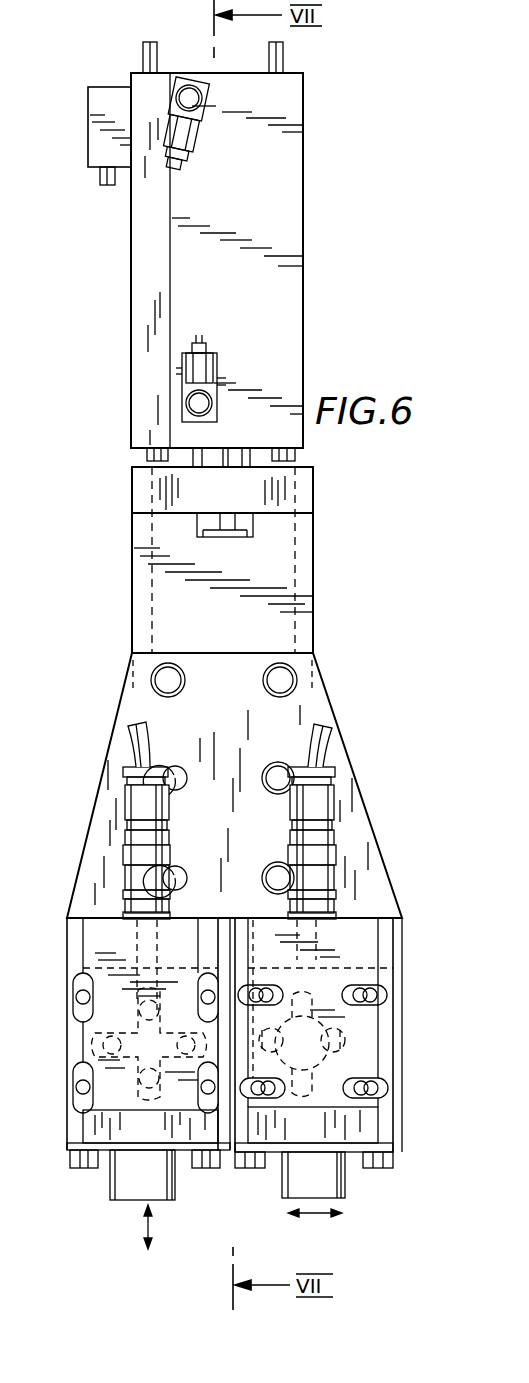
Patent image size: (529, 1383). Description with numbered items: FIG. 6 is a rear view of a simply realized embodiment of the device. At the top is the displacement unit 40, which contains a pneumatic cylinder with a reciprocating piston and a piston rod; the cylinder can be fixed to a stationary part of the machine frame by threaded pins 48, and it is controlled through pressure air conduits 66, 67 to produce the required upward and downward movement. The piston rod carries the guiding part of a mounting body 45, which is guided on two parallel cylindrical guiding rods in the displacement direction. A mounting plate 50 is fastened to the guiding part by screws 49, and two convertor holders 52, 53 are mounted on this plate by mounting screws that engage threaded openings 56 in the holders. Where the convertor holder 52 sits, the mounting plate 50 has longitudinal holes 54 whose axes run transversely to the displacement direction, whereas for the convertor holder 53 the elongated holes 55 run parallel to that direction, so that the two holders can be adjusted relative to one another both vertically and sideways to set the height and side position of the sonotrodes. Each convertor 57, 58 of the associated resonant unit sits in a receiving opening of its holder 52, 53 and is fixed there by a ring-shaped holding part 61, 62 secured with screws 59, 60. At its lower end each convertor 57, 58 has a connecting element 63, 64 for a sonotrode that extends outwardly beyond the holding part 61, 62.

The displacement unit 40 is at (306, 179).
The mounting body 45 is at (128, 558).
The threaded pins 48 is at (148, 42).
The screws 49 is at (285, 677).
The mounting plate 50 is at (377, 880).
The convertor holder 52 is at (403, 946).
The convertor holder 53 is at (73, 1037).
The longitudinal holes 54 is at (357, 1020).
The elongated holes 55 is at (80, 975).
The threaded openings 56 is at (83, 1087).
The convertor 57 is at (373, 937).
The convertor 58 is at (98, 930).
The screws 59 is at (388, 1160).
The screws 60 is at (82, 1166).
The ring-shaped holding part 61 is at (356, 1122).
The ring-shaped holding part 62 is at (82, 1127).
The connecting element 63 is at (338, 1185).
The connecting element 64 is at (168, 1182).
The pressure air conduit 66 is at (202, 337).
The pressure air conduit 67 is at (190, 165).